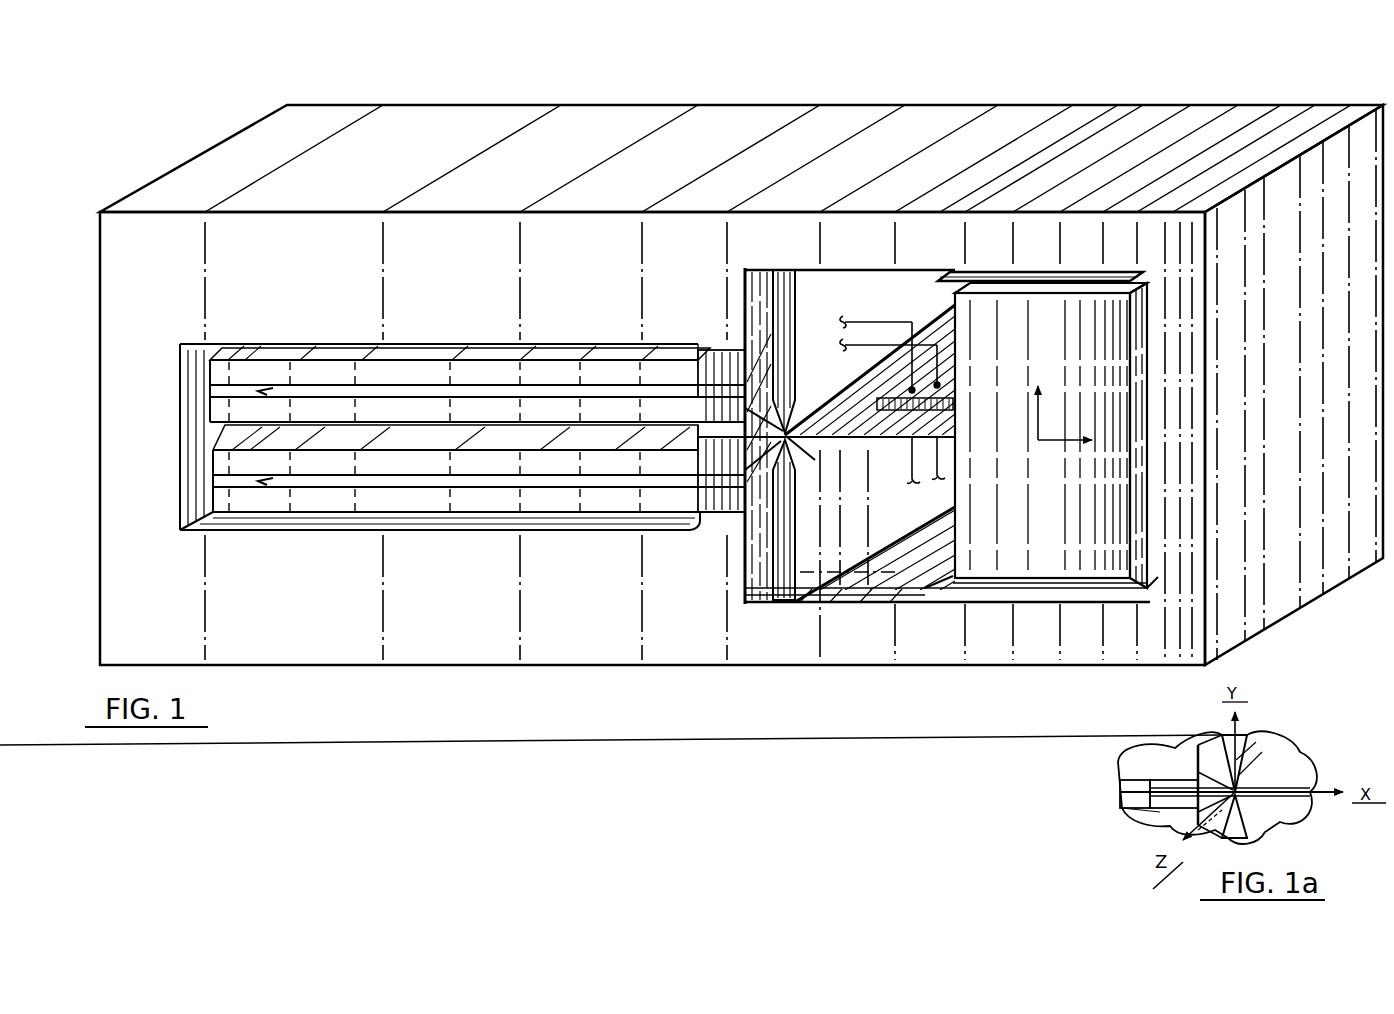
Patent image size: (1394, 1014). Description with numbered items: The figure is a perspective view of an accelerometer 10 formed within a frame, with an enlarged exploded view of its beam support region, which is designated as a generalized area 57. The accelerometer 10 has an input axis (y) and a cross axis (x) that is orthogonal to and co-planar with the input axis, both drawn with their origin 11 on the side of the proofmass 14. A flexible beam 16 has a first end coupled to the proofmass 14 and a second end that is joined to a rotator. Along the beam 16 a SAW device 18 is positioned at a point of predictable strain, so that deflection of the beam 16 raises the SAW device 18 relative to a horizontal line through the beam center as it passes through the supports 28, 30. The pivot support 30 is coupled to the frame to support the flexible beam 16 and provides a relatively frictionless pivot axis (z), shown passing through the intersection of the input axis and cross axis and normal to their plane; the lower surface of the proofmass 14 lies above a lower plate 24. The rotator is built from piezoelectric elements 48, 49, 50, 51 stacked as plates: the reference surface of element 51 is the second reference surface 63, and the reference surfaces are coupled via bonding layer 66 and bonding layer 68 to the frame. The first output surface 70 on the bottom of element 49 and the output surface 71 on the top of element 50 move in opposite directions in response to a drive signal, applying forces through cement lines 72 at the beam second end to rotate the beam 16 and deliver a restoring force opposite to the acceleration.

In FIG. 1, the accelerometer 10 is at (1177, 86).
In FIG. 1, the origin 11 is at (1041, 437).
In FIG. 1, the proofmass 14 is at (1052, 509).
In FIG. 1, the flexible beam 16 is at (851, 438).
In FIG. 1a, the flexible beam 16 is at (1286, 788).
In FIG. 1, the SAW device 18 is at (870, 370).
In FIG. 1, the lower plate 24 is at (946, 583).
In FIG. 1, the support 28 is at (846, 304).
In FIG. 1a, the support 28 is at (1254, 744).
In FIG. 1, the pivot support 30 is at (850, 509).
In FIG. 1a, the pivot support 30 is at (1256, 822).
In FIG. 1, the piezoelectric element 48 is at (462, 383).
In FIG. 1, the piezoelectric element 49 is at (477, 405).
In FIG. 1, the piezoelectric element 50 is at (479, 468).
In FIG. 1, the piezoelectric element 51 is at (479, 495).
In FIG. 1, the generalized area 57 is at (828, 451).
In FIG. 1a, the generalized area 57 is at (1292, 742).
In FIG. 1, the second reference surface 63 is at (718, 512).
In FIG. 1, the bonding layer 66 is at (727, 356).
In FIG. 1, the bonding layer 68 is at (728, 513).
In FIG. 1a, the first output surface 70 is at (1172, 776).
In FIG. 1a, the output surface 71 is at (1170, 814).
In FIG. 1a, the cement lines 72 is at (1124, 792).